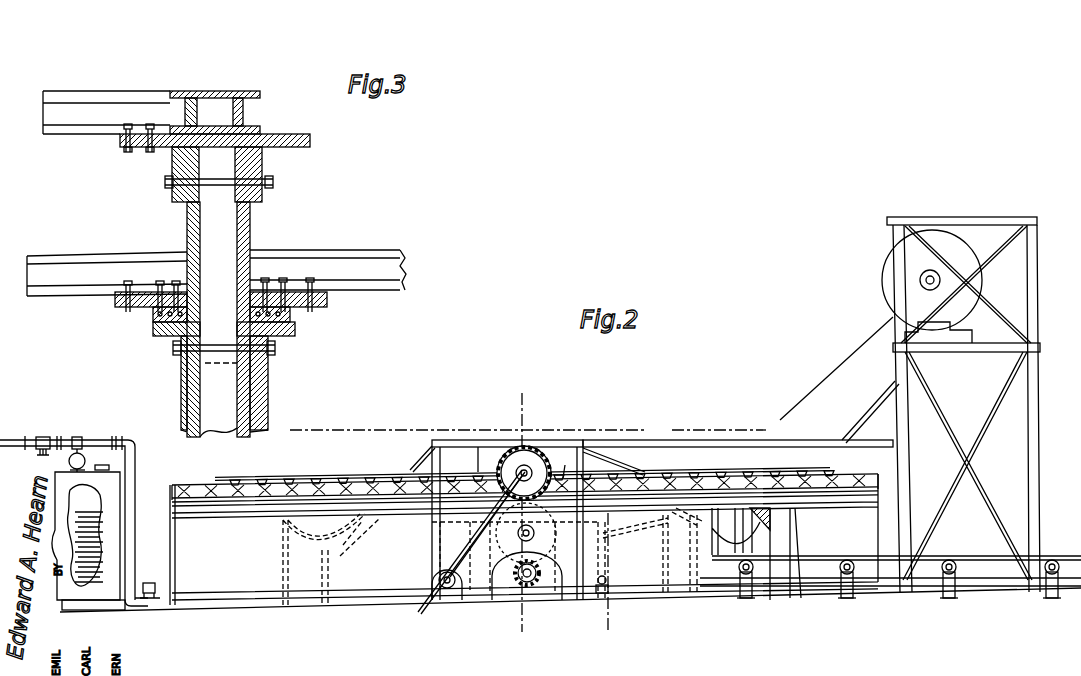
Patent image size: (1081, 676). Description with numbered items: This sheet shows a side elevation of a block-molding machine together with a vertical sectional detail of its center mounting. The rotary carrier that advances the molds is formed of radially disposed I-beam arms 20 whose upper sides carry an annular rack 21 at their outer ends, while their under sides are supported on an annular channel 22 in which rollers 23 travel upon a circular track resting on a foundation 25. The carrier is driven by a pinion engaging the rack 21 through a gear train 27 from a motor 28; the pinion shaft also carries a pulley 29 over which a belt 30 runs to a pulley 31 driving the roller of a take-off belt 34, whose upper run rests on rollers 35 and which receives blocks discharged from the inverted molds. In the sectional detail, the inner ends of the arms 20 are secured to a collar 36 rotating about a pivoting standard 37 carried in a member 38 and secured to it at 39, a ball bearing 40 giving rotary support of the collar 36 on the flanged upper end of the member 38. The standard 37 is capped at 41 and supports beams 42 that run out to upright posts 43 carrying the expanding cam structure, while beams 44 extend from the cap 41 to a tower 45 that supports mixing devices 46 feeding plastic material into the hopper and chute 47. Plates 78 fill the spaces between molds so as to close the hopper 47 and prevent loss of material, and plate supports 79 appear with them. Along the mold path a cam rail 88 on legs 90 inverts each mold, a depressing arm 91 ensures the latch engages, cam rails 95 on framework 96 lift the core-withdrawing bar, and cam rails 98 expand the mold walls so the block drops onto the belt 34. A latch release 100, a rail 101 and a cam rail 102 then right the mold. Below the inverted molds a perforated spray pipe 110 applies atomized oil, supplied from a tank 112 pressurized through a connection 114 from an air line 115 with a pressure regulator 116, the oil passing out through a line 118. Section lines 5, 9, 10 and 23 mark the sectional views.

In FIG. 2, the section line 5- 5 is at (530, 630).
In FIG. 2, the section line 9- 9 is at (287, 430).
In FIG. 2, the section line 10- 10 is at (672, 430).
In FIG. 3, the radially disposed arms 20 is at (87, 252).
In FIG. 2, the radially disposed arms 20 is at (196, 486).
In FIG. 2, the annular rack 21 is at (172, 485).
In FIG. 2, the annular channel 22 is at (172, 505).
In FIG. 2, the rollers 23 is at (608, 630).
In FIG. 2, the foundation 25 is at (690, 612).
In FIG. 2, the gear train 27 is at (526, 504).
In FIG. 2, the motor 28 is at (512, 600).
In FIG. 2, the pulley 29 is at (516, 472).
In FIG. 2, the belt 30 is at (455, 600).
In FIG. 2, the pulley 31 is at (420, 608).
In FIG. 2, the take-off belt 34 is at (818, 558).
In FIG. 2, the rollers 35 is at (840, 568).
In FIG. 3, the collar 36 is at (329, 300).
In FIG. 3, the pivoting standard 37 is at (250, 224).
In FIG. 3, the member 38 is at (268, 382).
In FIG. 3, the securing point 39 is at (280, 349).
In FIG. 3, the ball bearing 40 is at (153, 316).
In FIG. 3, the cap 41 is at (292, 134).
In FIG. 3, the beams 42 is at (76, 134).
In FIG. 2, the beams 42 is at (432, 443).
In FIG. 2, the upright posts 43 is at (582, 442).
In FIG. 2, the beams 44 is at (866, 447).
In FIG. 2, the tower 45 is at (1030, 376).
In FIG. 2, the mixing devices 46 is at (845, 367).
In FIG. 2, the hopper and chute 47 is at (886, 273).
In FIG. 2, the plates 78 is at (270, 478).
In FIG. 2, the rail foot 79 is at (300, 478).
In FIG. 2, the cam rail 88 is at (314, 546).
In FIG. 2, the legs 90 is at (333, 562).
In FIG. 2, the depressing arm 91 is at (420, 463).
In FIG. 2, the cam rails 95 is at (564, 464).
In FIG. 2, the framework 96 is at (470, 440).
In FIG. 2, the cam rails 98 is at (432, 522).
In FIG. 2, the latch release 100 is at (630, 461).
In FIG. 2, the rail 101 is at (622, 536).
In FIG. 2, the cam rail 102 is at (795, 536).
In FIG. 2, the spray pipe 110 is at (608, 582).
In FIG. 2, the tank 112 is at (58, 492).
In FIG. 2, the connection 114 is at (47, 453).
In FIG. 2, the air line 115 is at (32, 440).
In FIG. 2, the pressure regulator 116 is at (83, 466).
In FIG. 2, the line 118 is at (150, 583).